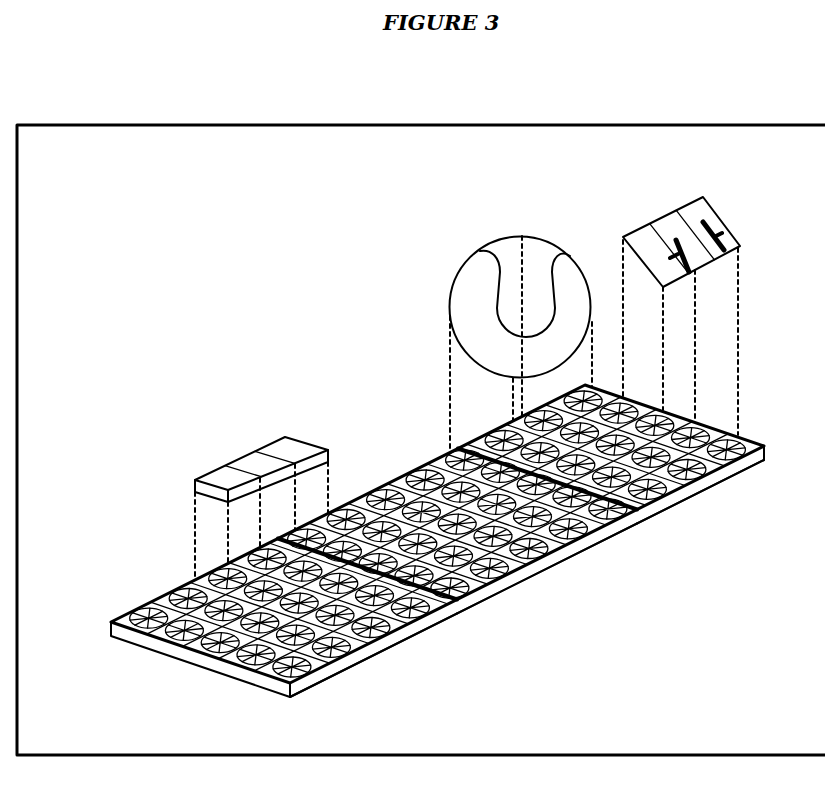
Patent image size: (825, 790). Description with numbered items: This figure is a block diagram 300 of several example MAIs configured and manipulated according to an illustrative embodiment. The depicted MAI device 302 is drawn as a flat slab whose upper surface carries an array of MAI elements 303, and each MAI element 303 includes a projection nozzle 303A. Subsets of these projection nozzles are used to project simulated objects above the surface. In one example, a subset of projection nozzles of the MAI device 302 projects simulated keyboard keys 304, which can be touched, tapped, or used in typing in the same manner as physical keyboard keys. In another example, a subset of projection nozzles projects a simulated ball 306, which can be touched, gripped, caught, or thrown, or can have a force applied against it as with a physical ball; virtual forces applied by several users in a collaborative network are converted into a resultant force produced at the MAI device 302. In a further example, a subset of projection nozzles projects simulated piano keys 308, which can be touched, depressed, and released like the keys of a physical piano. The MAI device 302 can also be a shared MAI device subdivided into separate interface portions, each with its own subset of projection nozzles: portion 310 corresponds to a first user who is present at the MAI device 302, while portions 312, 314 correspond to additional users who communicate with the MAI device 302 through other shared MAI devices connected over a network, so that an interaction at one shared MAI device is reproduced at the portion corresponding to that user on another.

The input device system 300 is at (421, 440).
The MAI device 302 is at (315, 678).
The MAI element 303 is at (235, 660).
The projection nozzle 303A is at (277, 682).
The simulated keyboard keys 304 is at (292, 430).
The simulated ball 306 is at (580, 237).
The simulated piano keys 308 is at (703, 197).
The portion 310 is at (435, 626).
The portion 312 is at (553, 563).
The portion 314 is at (700, 473).